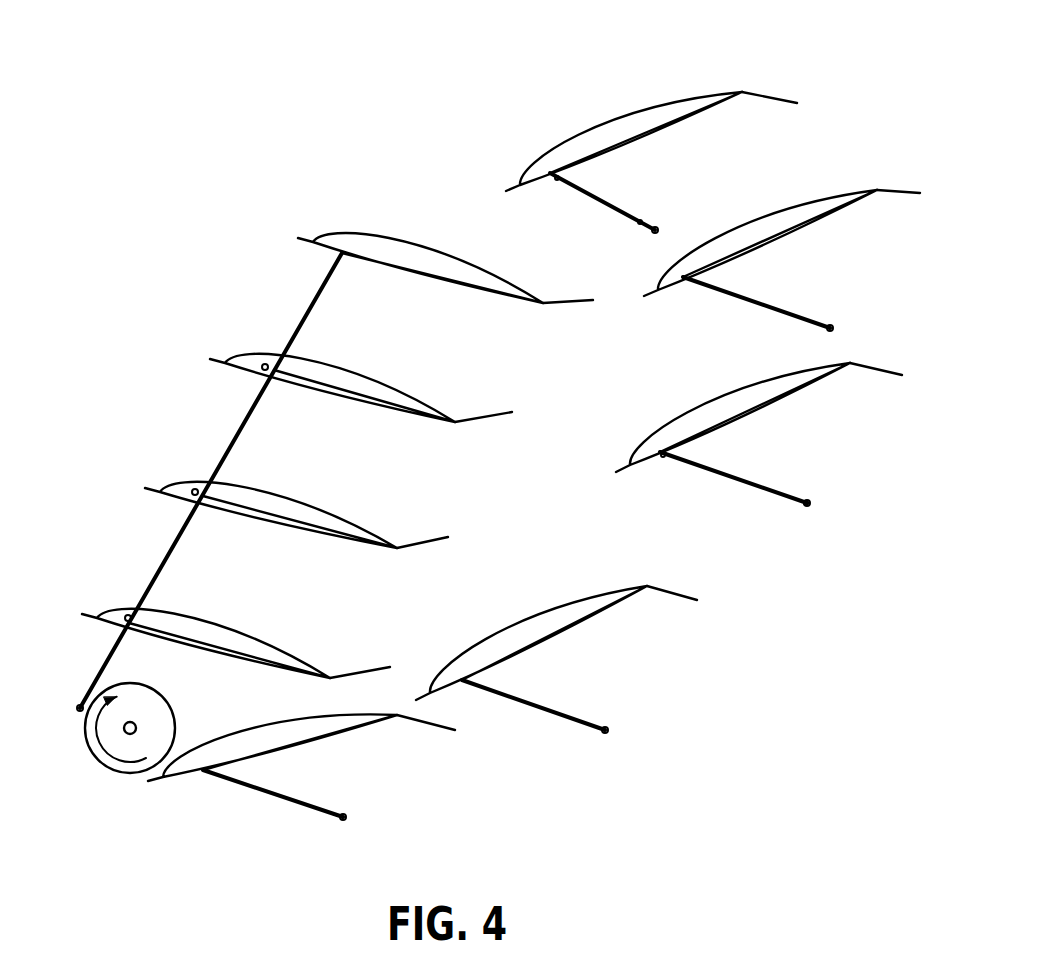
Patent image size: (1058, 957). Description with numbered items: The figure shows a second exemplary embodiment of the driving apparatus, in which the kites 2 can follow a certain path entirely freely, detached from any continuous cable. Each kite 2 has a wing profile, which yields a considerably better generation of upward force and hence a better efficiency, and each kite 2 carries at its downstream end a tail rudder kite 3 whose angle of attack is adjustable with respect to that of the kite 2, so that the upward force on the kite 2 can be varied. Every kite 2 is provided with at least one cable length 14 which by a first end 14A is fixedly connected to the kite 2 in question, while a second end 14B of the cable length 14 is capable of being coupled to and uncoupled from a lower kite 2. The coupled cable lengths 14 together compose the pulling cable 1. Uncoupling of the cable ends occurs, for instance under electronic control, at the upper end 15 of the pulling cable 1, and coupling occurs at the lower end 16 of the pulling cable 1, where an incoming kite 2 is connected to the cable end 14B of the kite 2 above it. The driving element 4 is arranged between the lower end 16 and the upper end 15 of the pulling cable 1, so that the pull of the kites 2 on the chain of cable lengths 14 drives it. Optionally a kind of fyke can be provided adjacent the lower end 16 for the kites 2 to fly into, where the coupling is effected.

The pulling cable 1 is at (102, 510).
The kite 2 is at (412, 397).
The tail rudder kite 3 is at (422, 540).
The driving element 4 is at (158, 722).
The cable length 14 is at (290, 315).
The first end of the cable length 14A is at (640, 223).
The second end of the cable length 14B is at (558, 180).
The upper end of the pulling cable 15 is at (377, 182).
The lower end of the pulling cable 16 is at (110, 798).